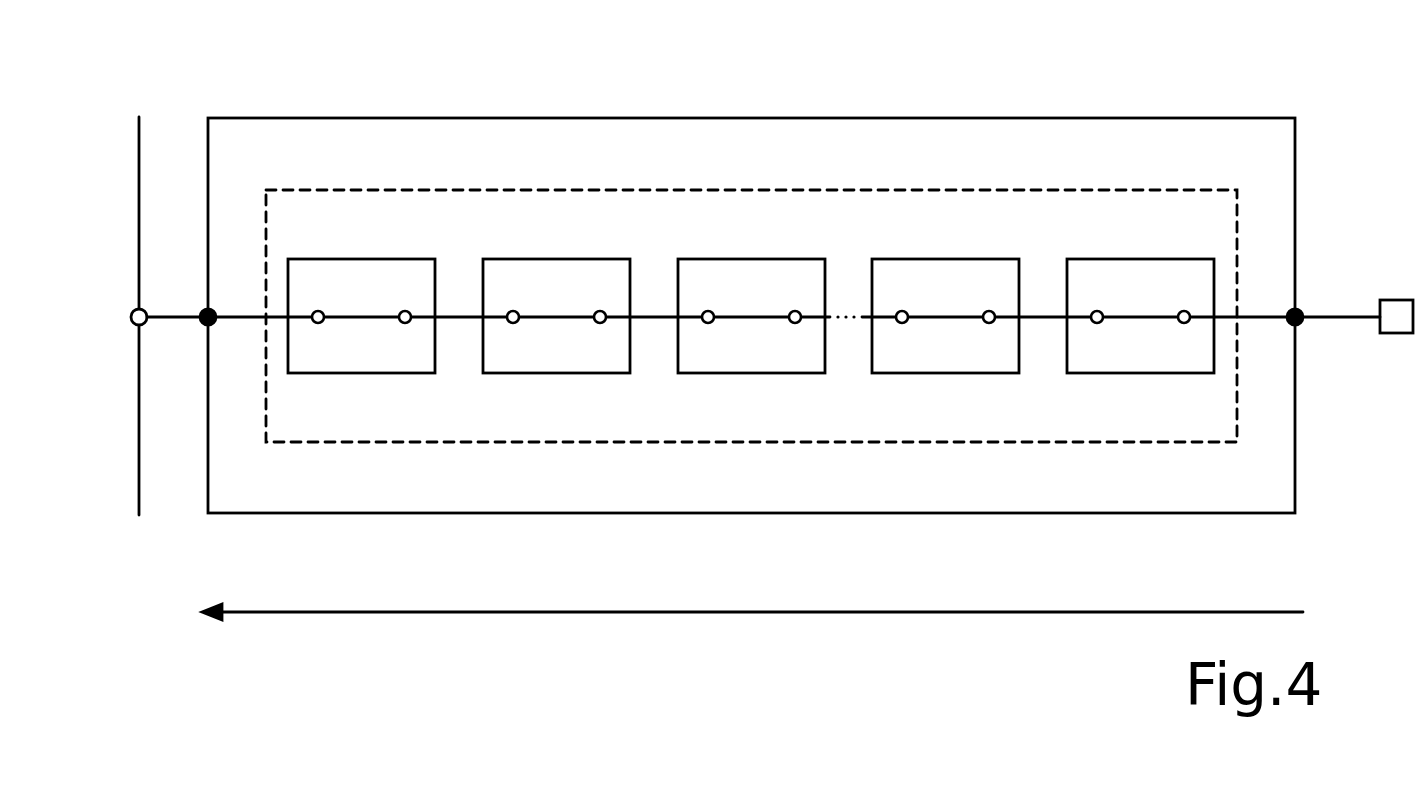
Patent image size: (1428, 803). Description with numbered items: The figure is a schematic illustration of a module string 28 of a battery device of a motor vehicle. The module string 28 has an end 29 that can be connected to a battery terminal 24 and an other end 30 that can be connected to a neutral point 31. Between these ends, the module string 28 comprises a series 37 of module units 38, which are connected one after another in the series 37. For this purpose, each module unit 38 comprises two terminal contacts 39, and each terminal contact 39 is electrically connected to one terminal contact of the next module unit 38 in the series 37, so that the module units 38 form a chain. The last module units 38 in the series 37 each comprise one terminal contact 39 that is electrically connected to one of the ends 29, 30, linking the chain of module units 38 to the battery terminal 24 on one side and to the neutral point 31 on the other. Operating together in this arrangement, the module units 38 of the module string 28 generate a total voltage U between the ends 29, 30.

The battery terminal 24 is at (1395, 299).
The module string 28 is at (1040, 118).
The end of the module string 29 is at (1298, 310).
The other end of the module string 30 is at (206, 310).
The neutral point 31 is at (139, 272).
The series of module units 37 is at (325, 190).
The module unit 38 is at (398, 373).
The terminal contact 39 is at (322, 311).
The total voltage U is at (796, 612).